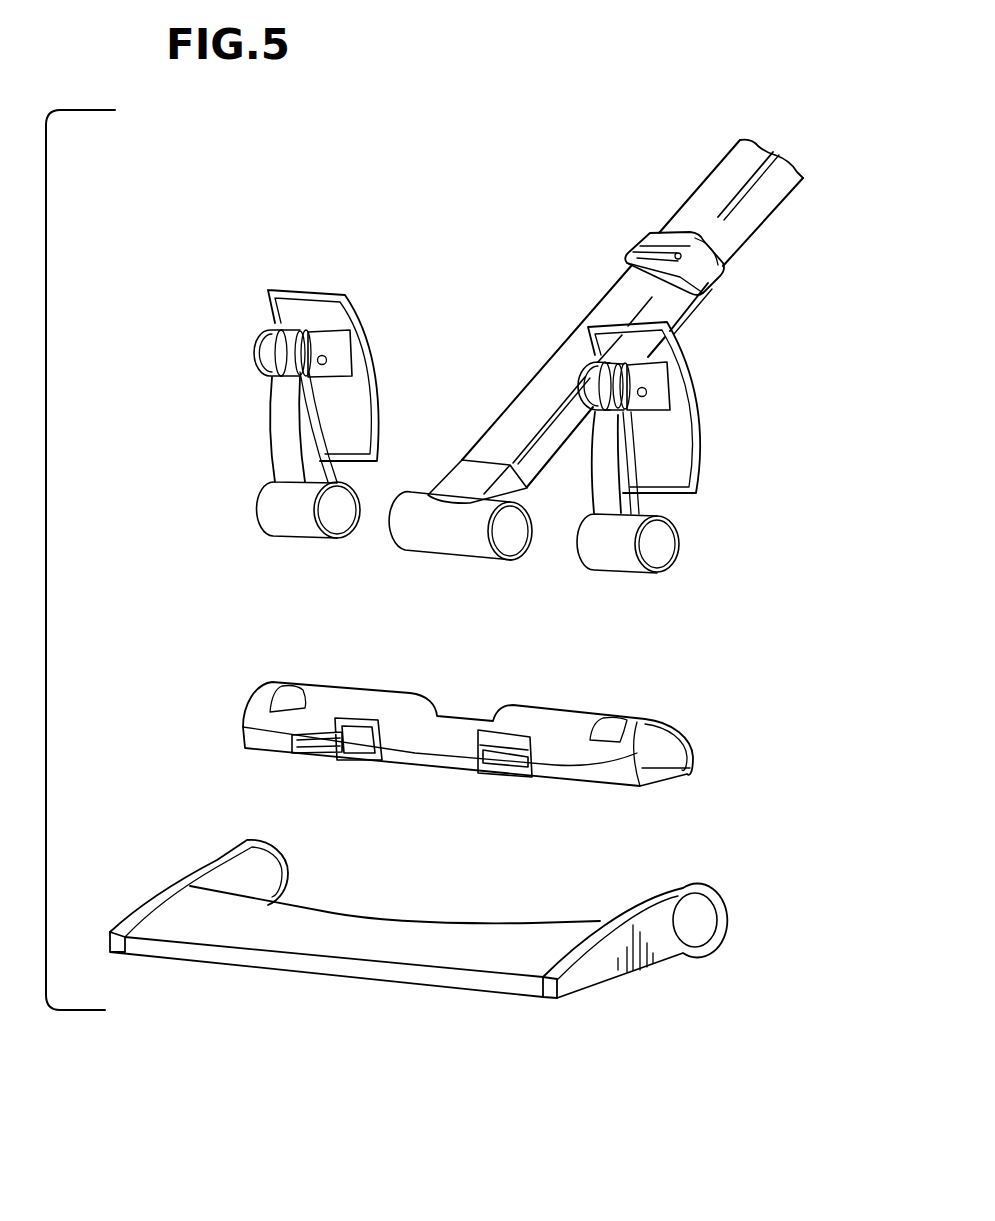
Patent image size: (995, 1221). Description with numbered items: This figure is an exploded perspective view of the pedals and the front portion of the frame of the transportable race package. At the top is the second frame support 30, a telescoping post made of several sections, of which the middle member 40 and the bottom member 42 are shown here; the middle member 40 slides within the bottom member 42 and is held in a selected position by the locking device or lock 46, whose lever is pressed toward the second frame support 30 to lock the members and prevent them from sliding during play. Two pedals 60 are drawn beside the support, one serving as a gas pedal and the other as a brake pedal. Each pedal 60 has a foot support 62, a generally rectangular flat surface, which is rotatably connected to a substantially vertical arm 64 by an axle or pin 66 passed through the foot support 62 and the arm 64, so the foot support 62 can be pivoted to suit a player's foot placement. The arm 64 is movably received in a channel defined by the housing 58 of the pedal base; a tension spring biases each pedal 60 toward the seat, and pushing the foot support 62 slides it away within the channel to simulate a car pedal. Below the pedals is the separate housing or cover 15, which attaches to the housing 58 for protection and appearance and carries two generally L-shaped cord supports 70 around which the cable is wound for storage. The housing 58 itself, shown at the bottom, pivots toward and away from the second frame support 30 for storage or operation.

The housing or cover 15 is at (583, 710).
The second frame support 30 is at (677, 180).
The middle member 40 is at (753, 212).
The bottom member 42 is at (547, 378).
The locking device or lock 46 is at (640, 242).
The housing 58 is at (422, 980).
The pedal 60 is at (322, 253).
The foot support 62 is at (300, 312).
The arm 64 is at (293, 440).
The pivot 66 is at (258, 352).
The cord support 70 is at (292, 748).